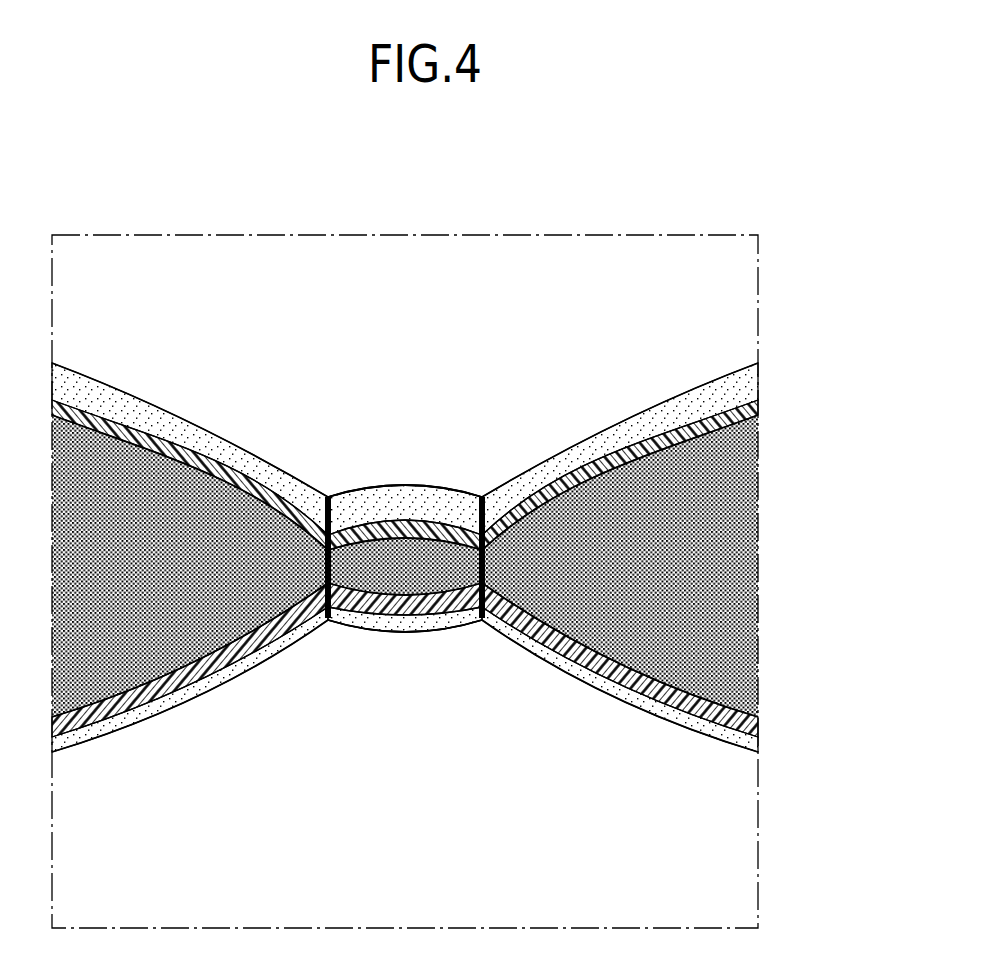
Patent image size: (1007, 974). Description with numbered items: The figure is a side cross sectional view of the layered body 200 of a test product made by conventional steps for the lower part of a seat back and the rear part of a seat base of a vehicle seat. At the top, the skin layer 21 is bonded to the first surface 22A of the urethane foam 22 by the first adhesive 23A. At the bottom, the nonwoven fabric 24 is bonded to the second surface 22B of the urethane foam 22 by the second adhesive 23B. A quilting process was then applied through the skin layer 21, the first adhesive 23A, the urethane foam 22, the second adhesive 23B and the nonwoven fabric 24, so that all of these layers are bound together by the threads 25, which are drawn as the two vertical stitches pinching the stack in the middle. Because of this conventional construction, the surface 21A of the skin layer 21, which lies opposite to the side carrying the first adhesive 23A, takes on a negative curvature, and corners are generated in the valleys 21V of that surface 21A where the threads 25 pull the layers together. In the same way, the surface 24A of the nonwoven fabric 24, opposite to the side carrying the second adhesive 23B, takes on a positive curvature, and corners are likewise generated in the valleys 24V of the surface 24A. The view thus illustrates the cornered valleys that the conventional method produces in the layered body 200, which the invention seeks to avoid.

The layered body 200 is at (410, 385).
The skin layer 21 is at (210, 442).
The surface of the skin layer 21A is at (145, 393).
The valleys 21V is at (333, 490).
The urethane foam 22 is at (705, 557).
The first surface 22A is at (687, 443).
The second surface 22B is at (700, 697).
The first adhesive 23A is at (758, 404).
The second adhesive 23B is at (760, 718).
The nonwoven fabric 24 is at (620, 703).
The surface of the nonwoven fabric 24A is at (197, 697).
The valleys 24V is at (334, 623).
The threads 25 is at (322, 620).